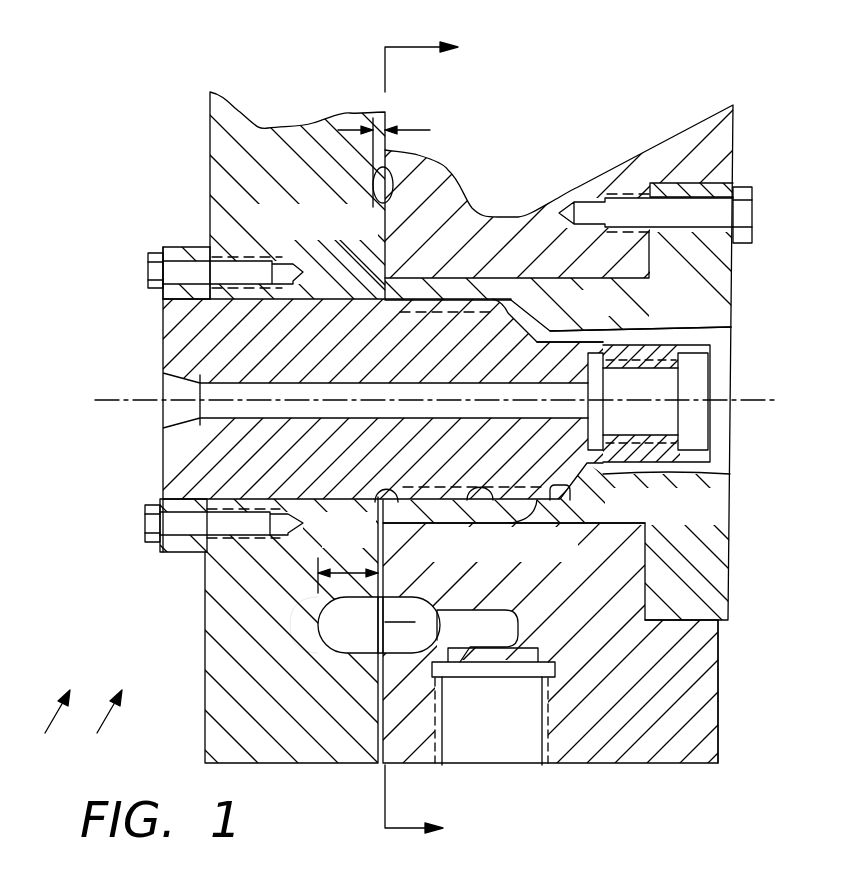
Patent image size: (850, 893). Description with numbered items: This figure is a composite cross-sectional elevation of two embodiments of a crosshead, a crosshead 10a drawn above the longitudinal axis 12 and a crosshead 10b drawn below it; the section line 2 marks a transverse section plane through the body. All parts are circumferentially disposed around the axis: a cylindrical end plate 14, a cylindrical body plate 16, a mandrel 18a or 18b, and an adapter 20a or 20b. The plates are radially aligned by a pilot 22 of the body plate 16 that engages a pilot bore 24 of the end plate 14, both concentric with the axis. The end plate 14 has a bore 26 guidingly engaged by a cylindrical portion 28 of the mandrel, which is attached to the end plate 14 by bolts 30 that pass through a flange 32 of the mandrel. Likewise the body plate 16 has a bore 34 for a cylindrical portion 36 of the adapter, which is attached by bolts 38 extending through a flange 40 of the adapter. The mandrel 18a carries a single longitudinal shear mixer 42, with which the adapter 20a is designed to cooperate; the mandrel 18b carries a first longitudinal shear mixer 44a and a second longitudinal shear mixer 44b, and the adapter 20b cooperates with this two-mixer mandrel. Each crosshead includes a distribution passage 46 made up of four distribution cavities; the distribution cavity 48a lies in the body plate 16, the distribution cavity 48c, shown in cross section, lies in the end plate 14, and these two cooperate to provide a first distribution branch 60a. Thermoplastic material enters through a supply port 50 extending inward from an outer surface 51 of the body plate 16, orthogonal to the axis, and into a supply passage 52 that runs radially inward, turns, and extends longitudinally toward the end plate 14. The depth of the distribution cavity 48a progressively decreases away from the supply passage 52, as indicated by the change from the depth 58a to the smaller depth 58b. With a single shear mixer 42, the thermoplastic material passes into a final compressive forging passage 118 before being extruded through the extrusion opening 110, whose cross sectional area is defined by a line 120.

The section line 2- 2 is at (434, 441).
The crosshead 10a is at (47, 728).
The crosshead 10b is at (103, 728).
The longitudinal axis 12 is at (130, 399).
The end plate 14 is at (266, 128).
The body plate 16 is at (622, 160).
The mandrel 18a is at (197, 247).
The mandrel 18b is at (184, 552).
The adapter 20a is at (683, 183).
The adapter 20b is at (688, 615).
The pilot 22 is at (375, 700).
The pilot bore 24 is at (378, 700).
The bore 26 is at (310, 298).
The cylindrical portion 28 is at (343, 298).
The bolts 30 is at (148, 270).
The flange 32 is at (192, 247).
The bore 34 is at (540, 288).
The cylindrical portion 36 is at (500, 282).
The bolts 38 is at (752, 199).
The flange 40 is at (733, 185).
The longitudinal shear mixer 42 is at (443, 300).
The first longitudinal shear mixer 44a is at (443, 527).
The second longitudinal shear mixer 44b is at (512, 527).
The distribution passage 46 is at (385, 620).
The distribution cavity 48a is at (430, 644).
The distribution cavity 48c is at (332, 646).
The supply port 50 is at (478, 767).
The outer surface 51 is at (578, 767).
The supply passage 52 is at (499, 637).
The depth 58a is at (355, 572).
The depth 58b is at (452, 112).
The first distribution branch 60a is at (320, 612).
The extrusion opening 110 is at (620, 462).
The final compressive forging passage 118 is at (515, 320).
The line 120 is at (635, 463).